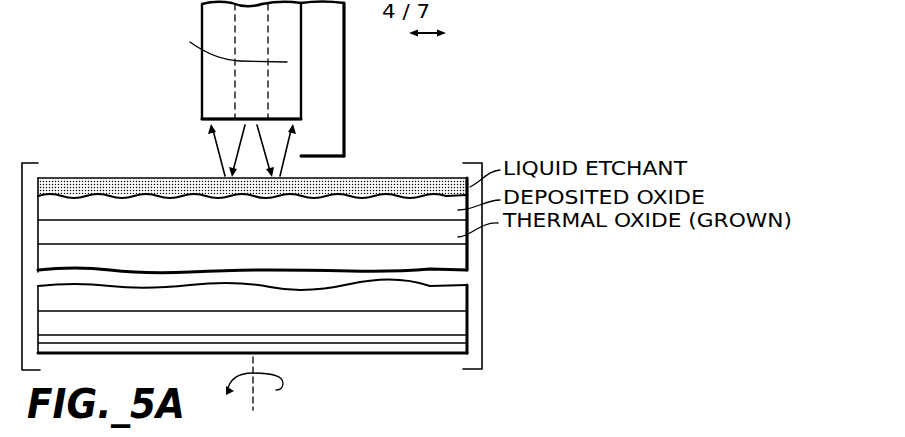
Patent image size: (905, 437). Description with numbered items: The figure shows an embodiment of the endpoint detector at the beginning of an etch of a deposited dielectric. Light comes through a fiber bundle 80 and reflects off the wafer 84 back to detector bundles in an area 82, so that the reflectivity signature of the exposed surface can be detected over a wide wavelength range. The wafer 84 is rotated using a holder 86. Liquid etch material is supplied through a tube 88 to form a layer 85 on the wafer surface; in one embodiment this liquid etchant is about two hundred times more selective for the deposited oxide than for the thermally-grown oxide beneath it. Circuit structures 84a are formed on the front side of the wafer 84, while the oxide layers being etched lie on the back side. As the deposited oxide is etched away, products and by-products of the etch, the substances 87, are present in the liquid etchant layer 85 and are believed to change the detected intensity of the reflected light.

The fiber bundle 80 is at (247, 33).
The area of bundles 82 is at (215, 45).
The wafer 84 is at (100, 47).
The circuit structures 84a is at (490, 310).
The layer 85 is at (418, 179).
The holder 86 is at (36, 163).
The substances 87 is at (353, 180).
The tube 88 is at (331, 60).